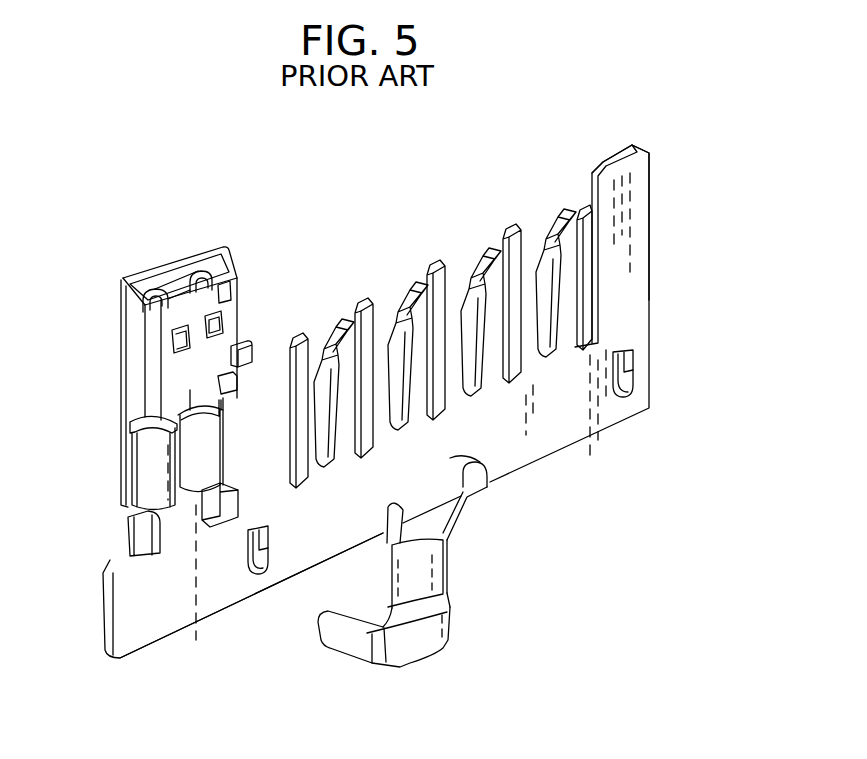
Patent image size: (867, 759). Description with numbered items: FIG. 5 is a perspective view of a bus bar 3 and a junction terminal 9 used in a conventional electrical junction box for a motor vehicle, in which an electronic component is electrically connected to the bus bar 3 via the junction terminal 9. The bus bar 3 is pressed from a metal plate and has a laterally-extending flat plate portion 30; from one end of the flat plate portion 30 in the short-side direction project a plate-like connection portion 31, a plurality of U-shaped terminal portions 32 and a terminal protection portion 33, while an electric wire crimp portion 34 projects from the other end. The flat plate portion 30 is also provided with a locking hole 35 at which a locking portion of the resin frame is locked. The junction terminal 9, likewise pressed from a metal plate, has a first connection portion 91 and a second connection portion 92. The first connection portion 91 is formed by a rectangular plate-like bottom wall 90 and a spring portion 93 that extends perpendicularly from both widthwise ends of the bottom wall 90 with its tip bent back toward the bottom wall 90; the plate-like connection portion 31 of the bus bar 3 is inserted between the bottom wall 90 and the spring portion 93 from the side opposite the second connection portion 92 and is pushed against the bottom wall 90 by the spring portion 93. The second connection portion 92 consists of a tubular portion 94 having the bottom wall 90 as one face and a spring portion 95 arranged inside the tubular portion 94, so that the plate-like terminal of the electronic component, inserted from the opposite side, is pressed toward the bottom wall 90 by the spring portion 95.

The bus bar 3 is at (612, 435).
The junction terminal 9 is at (193, 372).
The flat plate portion 30 is at (487, 482).
The plate-like connection portion 31 is at (185, 513).
The U-shaped terminal portions 32 is at (575, 211).
The terminal protection portion 33 is at (630, 210).
The electric wire crimp portion 34 is at (445, 613).
The locking hole 35 is at (633, 372).
The bottom wall 90 is at (122, 368).
The first connection portion 91 is at (236, 419).
The second connection portion 92 is at (250, 294).
The spring portion 93 is at (157, 475).
The tubular portion 94 is at (240, 323).
The spring portion 95 is at (201, 290).